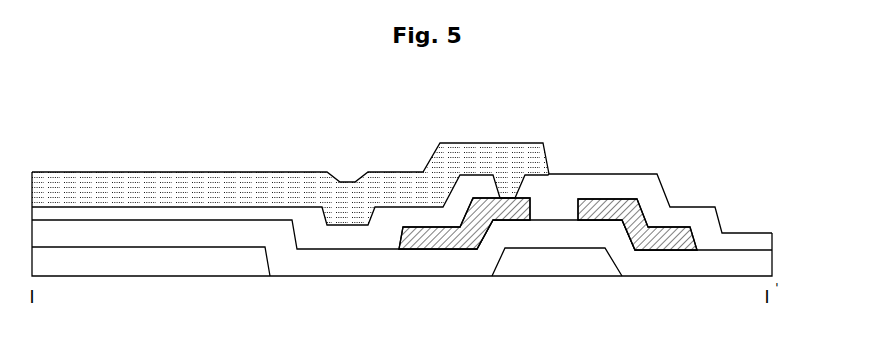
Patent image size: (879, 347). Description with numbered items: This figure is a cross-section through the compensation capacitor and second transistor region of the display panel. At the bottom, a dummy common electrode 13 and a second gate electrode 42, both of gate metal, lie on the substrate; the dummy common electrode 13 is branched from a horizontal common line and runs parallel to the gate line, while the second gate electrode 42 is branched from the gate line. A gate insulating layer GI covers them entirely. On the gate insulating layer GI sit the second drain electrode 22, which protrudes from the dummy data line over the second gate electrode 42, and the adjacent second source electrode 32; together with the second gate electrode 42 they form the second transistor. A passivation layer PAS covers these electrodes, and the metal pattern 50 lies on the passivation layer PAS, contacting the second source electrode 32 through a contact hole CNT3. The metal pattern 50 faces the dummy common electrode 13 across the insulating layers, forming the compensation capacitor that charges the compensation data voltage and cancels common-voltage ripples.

The dummy common electrode 13 is at (147, 267).
The second gate electrode 42 is at (563, 265).
The gate insulating layer GI is at (772, 262).
The second source electrode 32 is at (510, 198).
The second drain electrode 22 is at (612, 203).
The passivation layer PAS is at (772, 240).
The metal pattern 50 is at (118, 180).
The third contact hole CNT3 is at (497, 182).